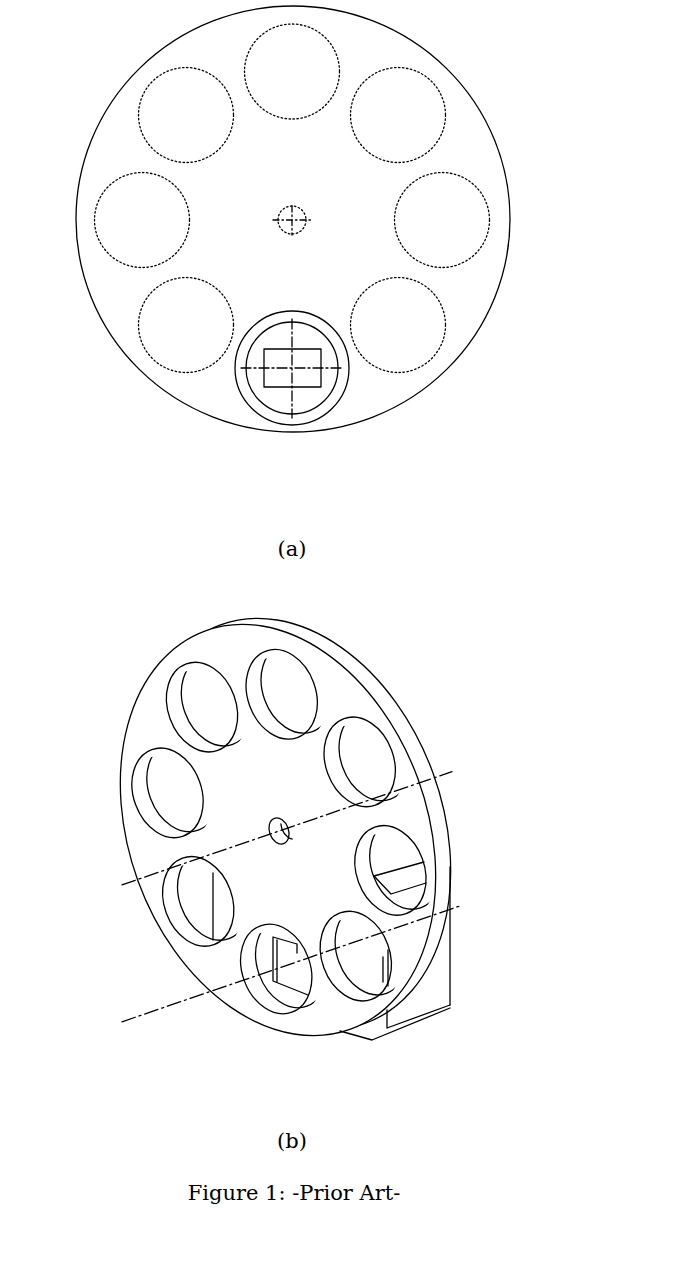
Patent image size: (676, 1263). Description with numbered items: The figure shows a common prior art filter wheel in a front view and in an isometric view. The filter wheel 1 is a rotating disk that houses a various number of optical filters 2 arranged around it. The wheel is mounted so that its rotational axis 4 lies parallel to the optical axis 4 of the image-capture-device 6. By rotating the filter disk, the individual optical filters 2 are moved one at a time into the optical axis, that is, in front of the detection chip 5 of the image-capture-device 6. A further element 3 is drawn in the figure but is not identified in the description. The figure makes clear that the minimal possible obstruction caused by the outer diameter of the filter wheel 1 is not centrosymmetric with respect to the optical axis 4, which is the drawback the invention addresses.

The filter wheel 1 is at (463, 142).
The optical filters 2 is at (425, 88).
The center hole / axis 3 is at (293, 221).
The rotational axis 4 is at (293, 369).
The detection chip 5 is at (298, 357).
The image-capture-device 6 is at (437, 995).